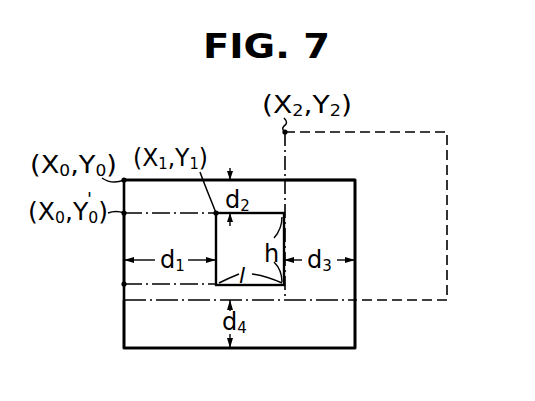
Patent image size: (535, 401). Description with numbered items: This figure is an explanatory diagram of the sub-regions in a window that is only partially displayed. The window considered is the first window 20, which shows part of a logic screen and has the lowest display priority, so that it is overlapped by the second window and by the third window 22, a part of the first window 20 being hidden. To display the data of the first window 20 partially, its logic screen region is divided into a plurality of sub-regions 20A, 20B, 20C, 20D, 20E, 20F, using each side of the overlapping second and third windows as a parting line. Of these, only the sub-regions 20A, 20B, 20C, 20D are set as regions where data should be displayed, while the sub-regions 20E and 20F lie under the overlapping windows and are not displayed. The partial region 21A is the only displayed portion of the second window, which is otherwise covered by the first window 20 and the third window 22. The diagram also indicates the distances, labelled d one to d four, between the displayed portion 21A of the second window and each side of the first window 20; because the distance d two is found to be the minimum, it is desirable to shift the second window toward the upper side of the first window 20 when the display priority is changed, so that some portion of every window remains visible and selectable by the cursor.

The first window 20 is at (118, 335).
The sub-region 20A is at (238, 196).
The sub-region 20B is at (168, 250).
The sub-region 20C is at (148, 290).
The sub-region 20D is at (239, 324).
The sub-region 20E is at (320, 264).
The sub-region 20F is at (250, 249).
The partial region of the second window 21A is at (250, 222).
The third window 22 is at (424, 132).